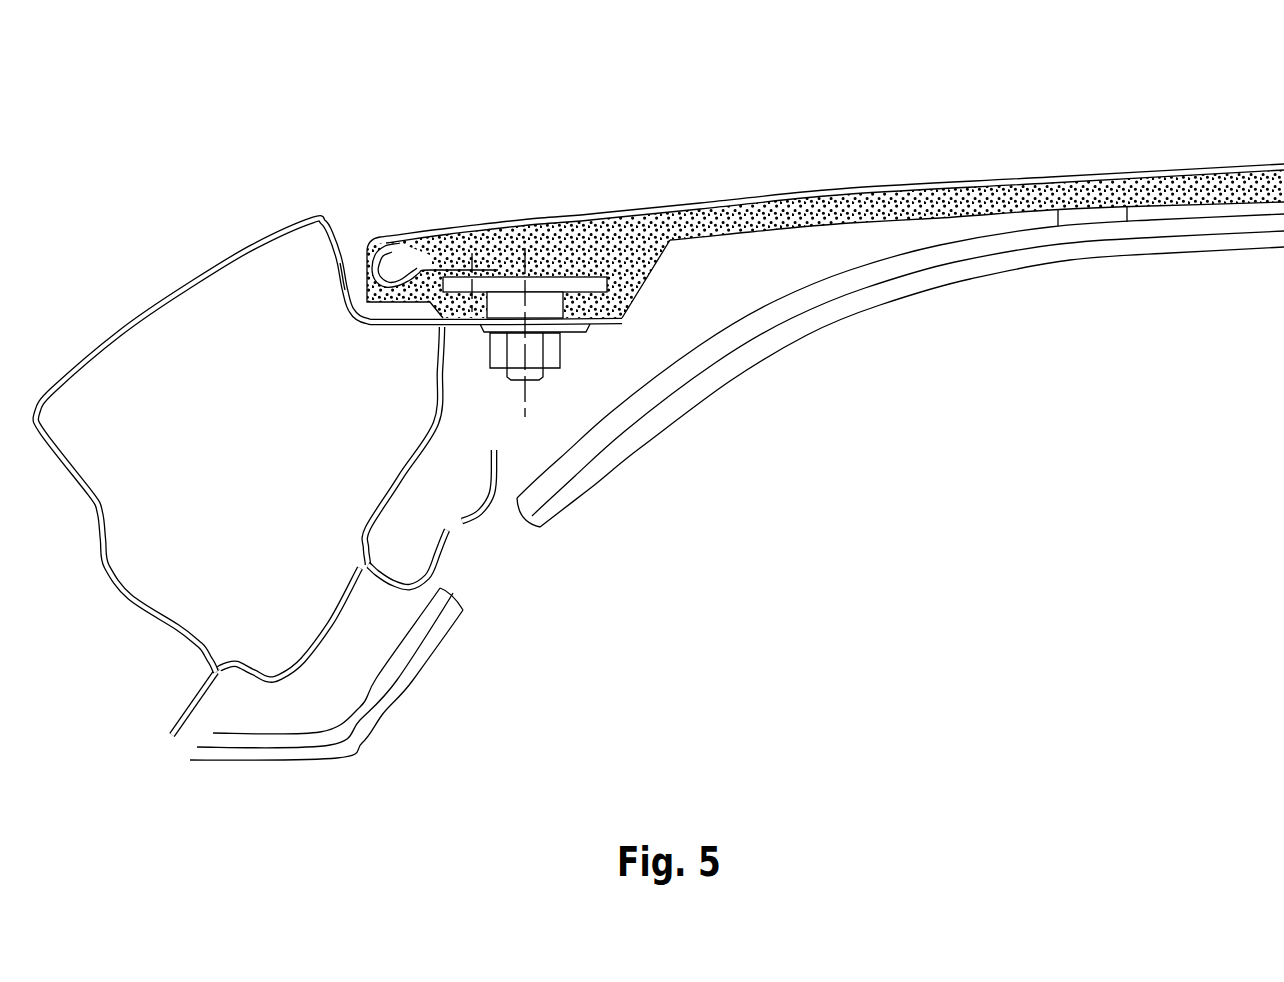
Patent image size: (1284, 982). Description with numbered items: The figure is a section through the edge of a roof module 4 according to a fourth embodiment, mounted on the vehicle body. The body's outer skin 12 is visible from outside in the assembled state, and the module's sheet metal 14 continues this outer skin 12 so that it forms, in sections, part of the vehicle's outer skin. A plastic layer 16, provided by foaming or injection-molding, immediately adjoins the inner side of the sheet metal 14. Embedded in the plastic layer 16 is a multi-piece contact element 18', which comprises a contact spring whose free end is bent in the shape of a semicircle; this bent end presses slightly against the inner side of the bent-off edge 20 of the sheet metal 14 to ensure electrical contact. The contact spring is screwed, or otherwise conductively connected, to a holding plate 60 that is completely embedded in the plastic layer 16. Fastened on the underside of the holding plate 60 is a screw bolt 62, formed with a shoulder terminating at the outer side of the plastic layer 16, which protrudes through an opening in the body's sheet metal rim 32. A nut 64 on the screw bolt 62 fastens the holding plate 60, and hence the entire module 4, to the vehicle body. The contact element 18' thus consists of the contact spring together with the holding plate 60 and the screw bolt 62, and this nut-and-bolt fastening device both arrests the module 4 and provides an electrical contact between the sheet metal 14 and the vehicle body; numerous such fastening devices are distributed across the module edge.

The roof module 4 is at (1090, 135).
The outer skin 12 is at (153, 300).
The sheet metal 14 is at (903, 190).
The plastic layer 16 is at (777, 213).
The contact element 18' is at (435, 222).
The bent-off edge 20 is at (365, 284).
The sheet metal rim 32 is at (463, 328).
The holding plate 60 is at (590, 280).
The screw bolt 62 is at (543, 297).
The nut 64 is at (553, 347).